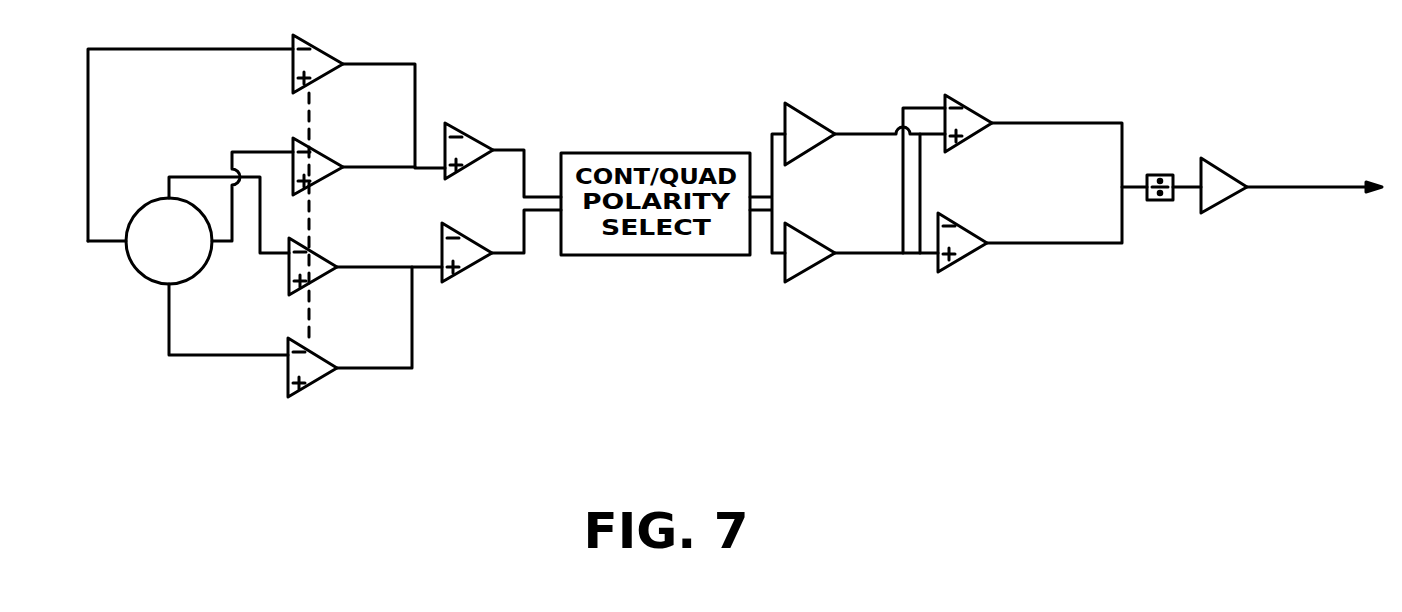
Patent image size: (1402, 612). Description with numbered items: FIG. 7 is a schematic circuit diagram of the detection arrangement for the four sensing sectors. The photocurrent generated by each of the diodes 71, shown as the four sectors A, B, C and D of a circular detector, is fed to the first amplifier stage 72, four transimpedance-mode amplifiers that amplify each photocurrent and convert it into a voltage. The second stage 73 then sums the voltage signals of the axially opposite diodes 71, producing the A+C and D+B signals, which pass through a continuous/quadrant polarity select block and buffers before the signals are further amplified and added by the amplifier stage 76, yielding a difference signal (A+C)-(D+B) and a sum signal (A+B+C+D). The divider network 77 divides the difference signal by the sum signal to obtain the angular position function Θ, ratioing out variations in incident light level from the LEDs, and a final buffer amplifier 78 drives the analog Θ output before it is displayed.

The diodes 71 is at (139, 276).
The first amplifier stage 72 is at (295, 397).
The second stage 73 is at (489, 325).
The difference and sum amplifiers 76 is at (960, 325).
The divider network 77 is at (1158, 200).
The final buffer amplifier 78 is at (1229, 203).